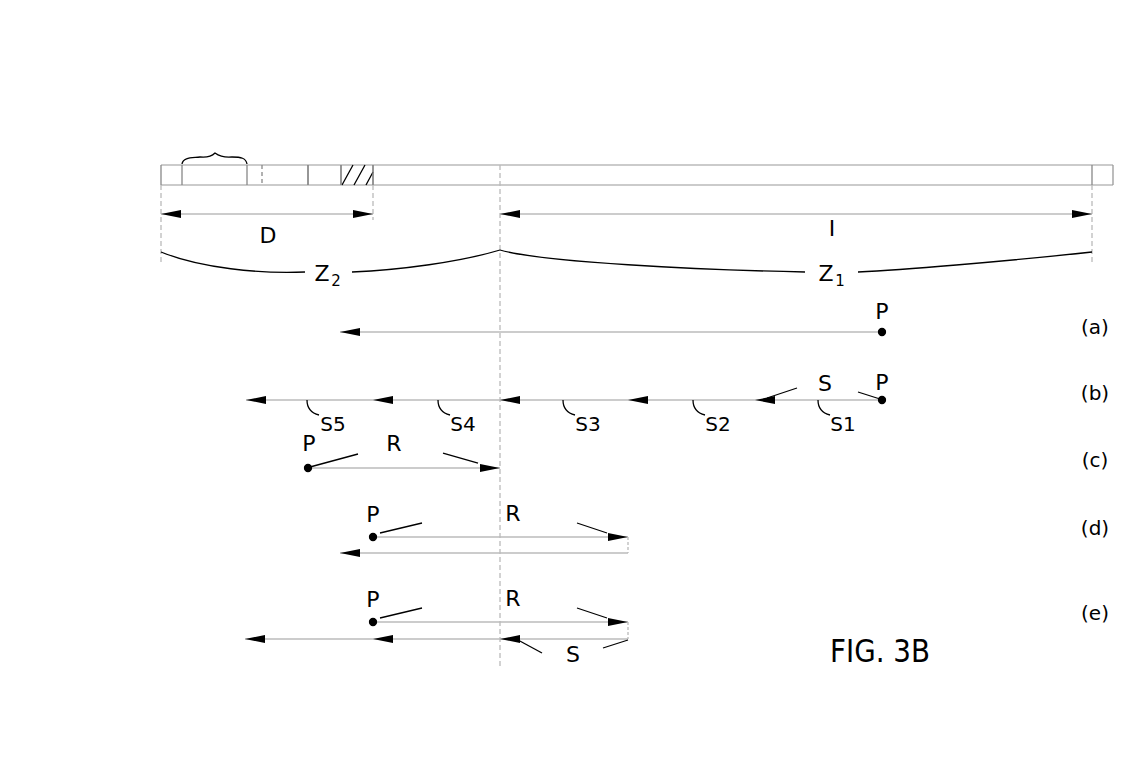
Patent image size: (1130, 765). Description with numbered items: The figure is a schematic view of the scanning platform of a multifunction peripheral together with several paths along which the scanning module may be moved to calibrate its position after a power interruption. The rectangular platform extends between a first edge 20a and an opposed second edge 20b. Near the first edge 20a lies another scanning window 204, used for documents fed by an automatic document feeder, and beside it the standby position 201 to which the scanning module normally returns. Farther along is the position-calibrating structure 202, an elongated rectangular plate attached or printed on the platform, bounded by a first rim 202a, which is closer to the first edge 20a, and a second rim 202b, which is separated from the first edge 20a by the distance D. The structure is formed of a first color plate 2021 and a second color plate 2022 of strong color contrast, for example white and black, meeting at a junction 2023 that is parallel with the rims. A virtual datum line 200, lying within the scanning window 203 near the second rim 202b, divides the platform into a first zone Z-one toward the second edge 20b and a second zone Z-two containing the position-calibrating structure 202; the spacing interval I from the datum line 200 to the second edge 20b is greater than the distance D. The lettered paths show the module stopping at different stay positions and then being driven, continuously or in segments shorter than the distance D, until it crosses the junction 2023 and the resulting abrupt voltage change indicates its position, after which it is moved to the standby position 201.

The first edge 20a is at (160, 170).
The second edge 20b is at (1113, 170).
The datum line 200 is at (500, 165).
The standby position 201 is at (262, 164).
The position-calibrating structure 202 is at (390, 132).
The first rim 202a is at (308, 175).
The second rim 202b is at (399, 160).
The first color plate 2021 is at (323, 168).
The second color plate 2022 is at (356, 165).
The junction 2023 is at (341, 172).
The scanning window 203 is at (678, 177).
The scanning window 204 is at (214, 155).